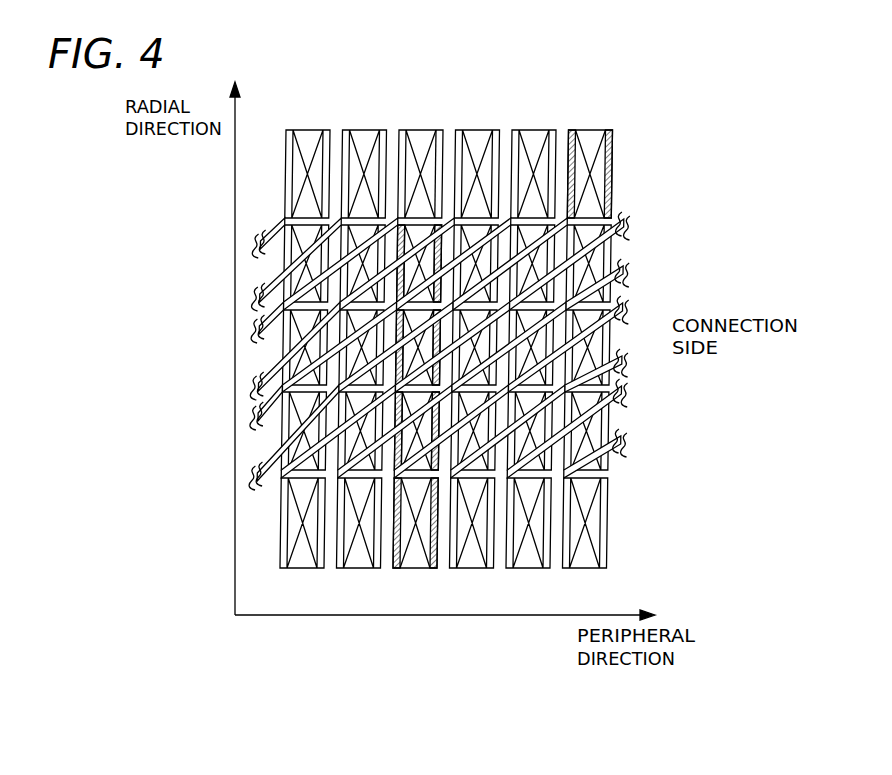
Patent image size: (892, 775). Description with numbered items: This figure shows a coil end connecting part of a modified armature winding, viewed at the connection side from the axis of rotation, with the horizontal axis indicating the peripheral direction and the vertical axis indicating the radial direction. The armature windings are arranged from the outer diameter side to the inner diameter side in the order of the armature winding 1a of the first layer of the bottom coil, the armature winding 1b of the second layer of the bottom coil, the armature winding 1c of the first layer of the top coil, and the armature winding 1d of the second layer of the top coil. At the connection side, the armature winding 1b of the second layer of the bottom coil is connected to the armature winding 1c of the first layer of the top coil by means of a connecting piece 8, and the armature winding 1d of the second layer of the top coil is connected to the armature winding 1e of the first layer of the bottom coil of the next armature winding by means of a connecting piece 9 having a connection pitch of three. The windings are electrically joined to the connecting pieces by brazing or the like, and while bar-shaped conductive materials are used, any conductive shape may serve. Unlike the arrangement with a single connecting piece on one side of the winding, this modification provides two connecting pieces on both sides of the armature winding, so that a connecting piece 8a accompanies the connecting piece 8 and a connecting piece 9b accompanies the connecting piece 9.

The connecting piece 8 is at (393, 216).
The connecting piece 8a is at (450, 216).
The armature winding of the first layer of the bottom coil 1a is at (414, 138).
The armature winding of the second layer of the bottom coil 1b is at (436, 172).
The armature winding of the first layer of the top coil 1c is at (396, 560).
The armature winding of the second layer of the top coil 1d is at (416, 563).
The armature winding of the first layer of the bottom coil of the next armature wind 1e is at (589, 138).
The connecting piece 9 is at (569, 146).
The connecting piece 9b is at (614, 155).